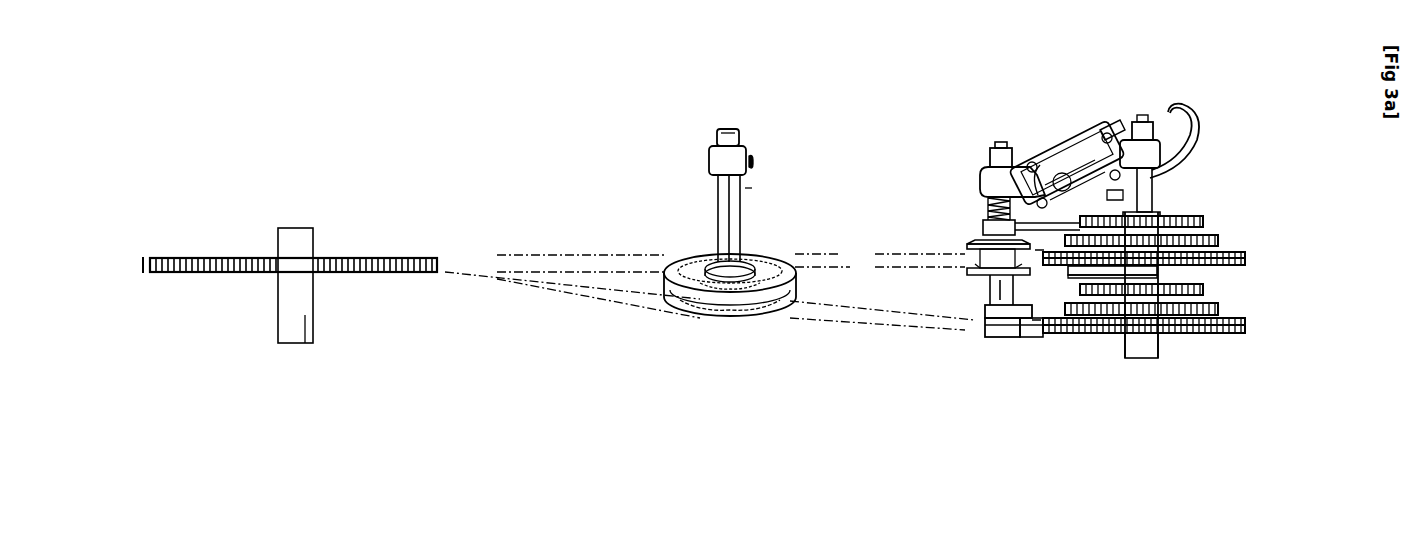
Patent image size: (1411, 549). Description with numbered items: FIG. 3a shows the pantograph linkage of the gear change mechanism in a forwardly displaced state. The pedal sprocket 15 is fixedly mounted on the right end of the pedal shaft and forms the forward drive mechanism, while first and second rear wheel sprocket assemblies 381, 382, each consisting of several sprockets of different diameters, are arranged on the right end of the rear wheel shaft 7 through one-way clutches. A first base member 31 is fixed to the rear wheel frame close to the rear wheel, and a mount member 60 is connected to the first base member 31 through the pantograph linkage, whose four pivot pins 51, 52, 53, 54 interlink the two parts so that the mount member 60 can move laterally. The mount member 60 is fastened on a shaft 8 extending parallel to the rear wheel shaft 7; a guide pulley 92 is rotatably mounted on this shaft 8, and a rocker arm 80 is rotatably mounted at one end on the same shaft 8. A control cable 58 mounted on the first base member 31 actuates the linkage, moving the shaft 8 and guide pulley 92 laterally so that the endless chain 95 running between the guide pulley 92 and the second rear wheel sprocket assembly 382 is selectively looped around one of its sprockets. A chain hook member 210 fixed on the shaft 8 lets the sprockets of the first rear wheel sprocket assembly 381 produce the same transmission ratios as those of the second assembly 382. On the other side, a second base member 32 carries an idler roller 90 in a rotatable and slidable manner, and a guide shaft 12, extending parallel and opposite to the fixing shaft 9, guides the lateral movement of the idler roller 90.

The pedal sprocket 15 is at (200, 277).
The fixing shaft 9 is at (303, 345).
The second base member 32 is at (714, 146).
The guide shaft 12 is at (716, 198).
The idler roller 90 is at (692, 322).
The endless chain 95 is at (858, 270).
The guide pulley 92 is at (972, 240).
The shaft 8 is at (975, 287).
The chain hook member 210 is at (983, 340).
The rear wheel shaft 7 is at (1143, 360).
The second rear wheel sprocket assembly 382 is at (1235, 216).
The first rear wheel sprocket assembly 381 is at (1240, 340).
The rocker arm 80 is at (1000, 141).
The mount member 60 is at (985, 168).
The pivot pin 51 is at (943, 206).
The pivot pin 53 is at (1047, 142).
The pivot pin 54 is at (1026, 152).
The pivot pin 52 is at (1111, 112).
The first base member 31 is at (1155, 125).
The control cable 58 is at (1192, 130).